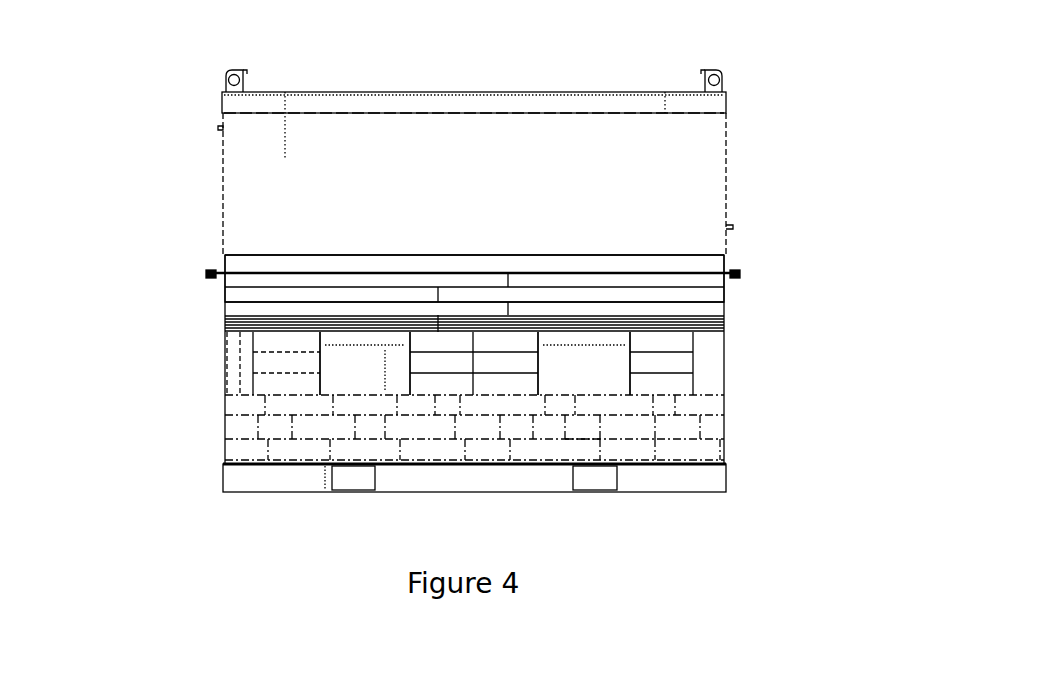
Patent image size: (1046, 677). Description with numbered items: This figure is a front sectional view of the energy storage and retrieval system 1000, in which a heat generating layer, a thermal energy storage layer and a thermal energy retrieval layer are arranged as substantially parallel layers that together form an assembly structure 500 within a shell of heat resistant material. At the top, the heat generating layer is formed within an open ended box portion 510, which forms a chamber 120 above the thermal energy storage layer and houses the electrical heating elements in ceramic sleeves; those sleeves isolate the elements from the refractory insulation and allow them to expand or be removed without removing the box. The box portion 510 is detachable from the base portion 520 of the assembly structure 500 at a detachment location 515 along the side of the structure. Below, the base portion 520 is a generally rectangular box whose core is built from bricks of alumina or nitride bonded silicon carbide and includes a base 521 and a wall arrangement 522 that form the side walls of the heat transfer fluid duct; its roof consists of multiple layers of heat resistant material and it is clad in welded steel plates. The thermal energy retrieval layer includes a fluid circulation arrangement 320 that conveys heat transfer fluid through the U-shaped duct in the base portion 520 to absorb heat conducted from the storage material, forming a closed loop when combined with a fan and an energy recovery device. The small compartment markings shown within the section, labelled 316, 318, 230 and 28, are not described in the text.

The energy storage and retrieval system 1000 is at (170, 96).
The box portion 510 is at (323, 92).
The chamber 120 is at (512, 188).
The detachment location 515 is at (740, 272).
The assembly structure 500 is at (213, 325).
The fluid circulation arrangement 320 is at (363, 345).
The compartment 316 is at (365, 363).
The compartment 318 is at (584, 363).
The divider 230 is at (391, 370).
The storage bin 28 is at (460, 394).
The base portion 520 is at (223, 422).
The wall arrangement 522 is at (672, 362).
The base 521 is at (600, 432).